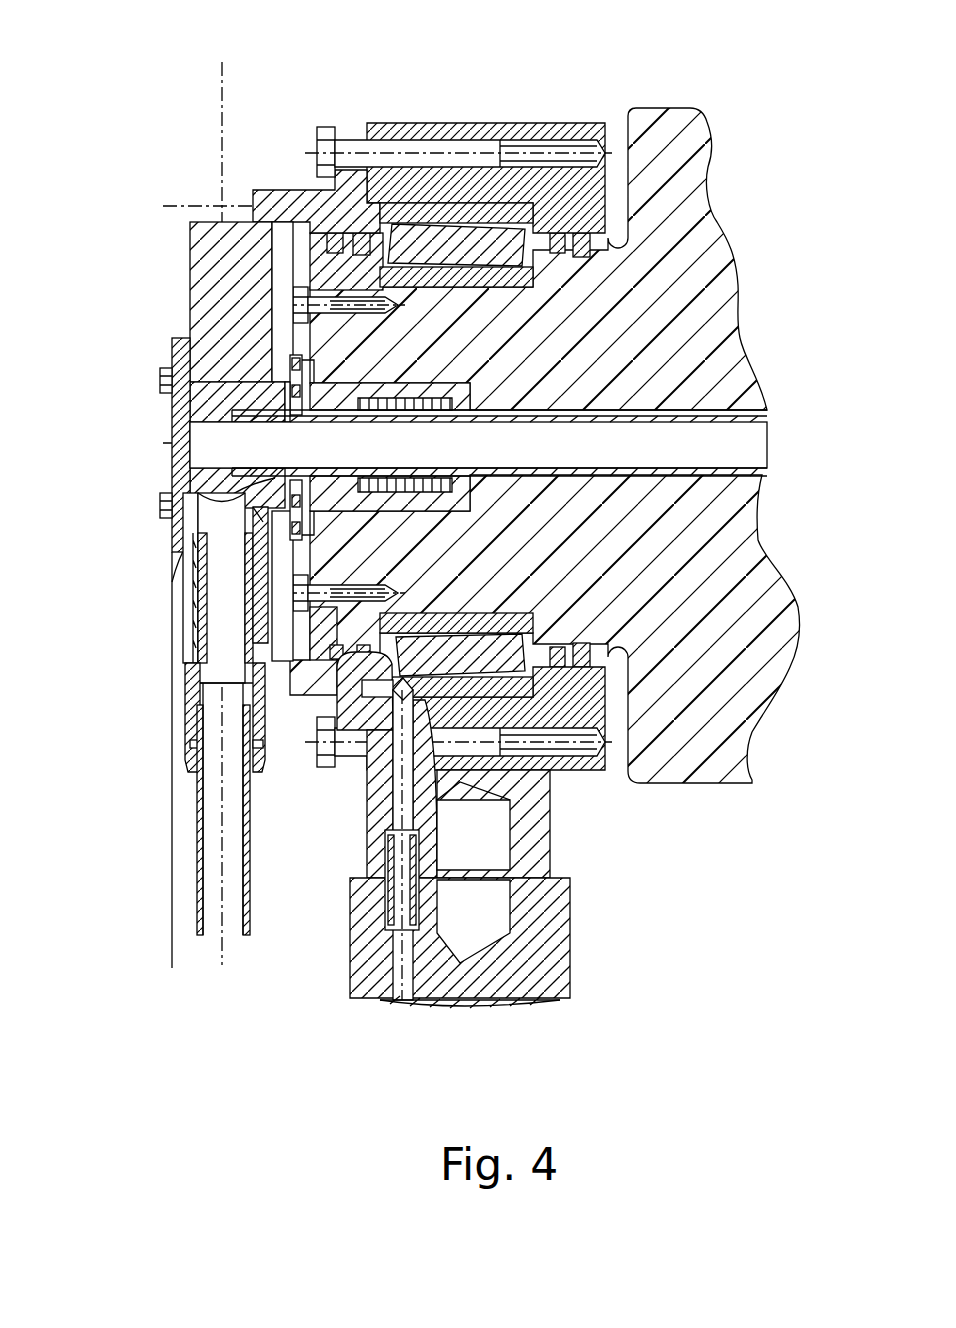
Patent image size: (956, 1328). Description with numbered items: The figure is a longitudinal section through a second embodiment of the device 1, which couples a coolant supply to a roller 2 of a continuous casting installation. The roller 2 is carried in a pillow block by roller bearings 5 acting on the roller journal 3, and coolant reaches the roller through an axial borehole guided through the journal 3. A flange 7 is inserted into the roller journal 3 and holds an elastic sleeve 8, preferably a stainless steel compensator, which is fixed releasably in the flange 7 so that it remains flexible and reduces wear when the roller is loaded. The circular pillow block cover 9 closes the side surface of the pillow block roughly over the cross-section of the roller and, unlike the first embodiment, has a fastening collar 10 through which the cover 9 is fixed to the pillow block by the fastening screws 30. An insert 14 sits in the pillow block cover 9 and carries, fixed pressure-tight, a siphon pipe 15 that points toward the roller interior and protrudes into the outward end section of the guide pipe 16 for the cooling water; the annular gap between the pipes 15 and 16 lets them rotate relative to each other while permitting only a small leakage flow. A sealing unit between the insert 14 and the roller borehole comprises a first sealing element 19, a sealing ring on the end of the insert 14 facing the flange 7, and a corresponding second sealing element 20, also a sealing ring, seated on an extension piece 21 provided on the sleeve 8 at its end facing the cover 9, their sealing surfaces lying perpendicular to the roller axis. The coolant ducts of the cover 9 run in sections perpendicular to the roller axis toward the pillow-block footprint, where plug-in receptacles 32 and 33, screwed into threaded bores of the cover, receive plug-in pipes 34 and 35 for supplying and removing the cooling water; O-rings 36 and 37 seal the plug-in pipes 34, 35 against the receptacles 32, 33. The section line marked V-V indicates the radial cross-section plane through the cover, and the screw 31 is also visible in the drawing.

The device 1 is at (450, 507).
The roller 2 is at (700, 240).
The roller journal 3 is at (574, 331).
The roller bearings 5 is at (537, 270).
The flange 7 is at (340, 383).
The elastic sleeve 8 is at (415, 388).
The pillow block cover 9 is at (205, 282).
The fastening collar 10 is at (300, 190).
The insert 14 is at (172, 474).
The siphon pipe 15 is at (208, 405).
The guide pipe 16 is at (768, 425).
The sealing element 19 is at (272, 385).
The sealing element 20 is at (200, 565).
The extension piece 21 is at (345, 480).
The fastening screws 30 is at (315, 130).
The screw 31 is at (160, 380).
The plug-in receptacle 32 is at (155, 717).
The plug-in receptacle 33 is at (192, 680).
The plug-in pipe 34 is at (150, 809).
The plug-in pipe 35 is at (200, 825).
The O-ring 36 is at (156, 762).
The O-ring 37 is at (190, 744).